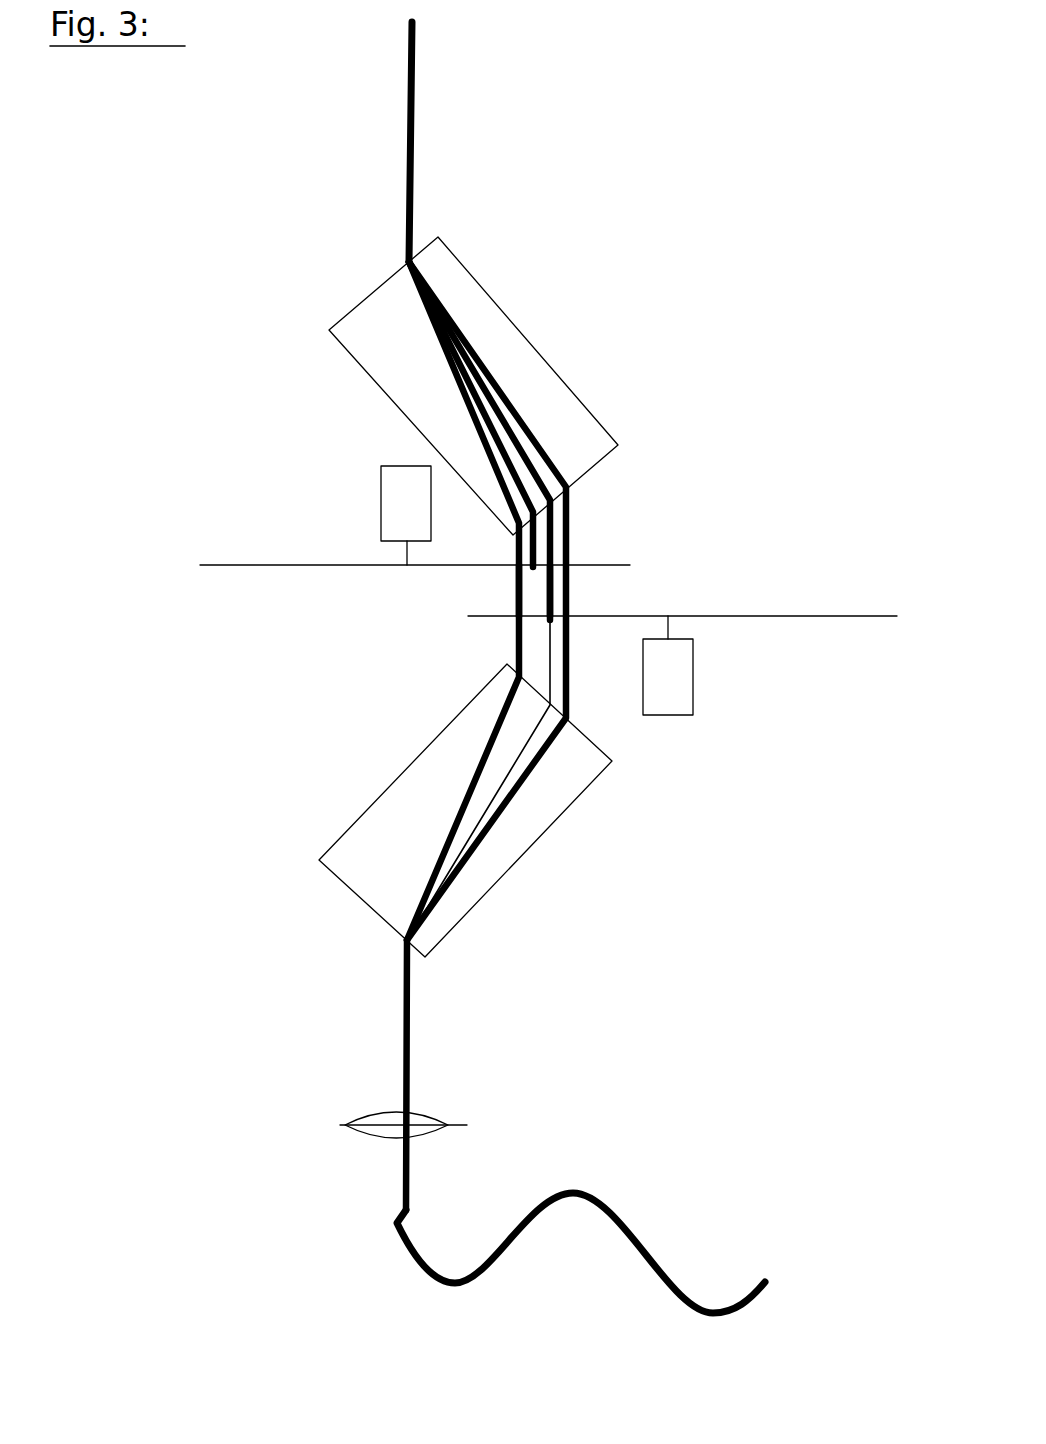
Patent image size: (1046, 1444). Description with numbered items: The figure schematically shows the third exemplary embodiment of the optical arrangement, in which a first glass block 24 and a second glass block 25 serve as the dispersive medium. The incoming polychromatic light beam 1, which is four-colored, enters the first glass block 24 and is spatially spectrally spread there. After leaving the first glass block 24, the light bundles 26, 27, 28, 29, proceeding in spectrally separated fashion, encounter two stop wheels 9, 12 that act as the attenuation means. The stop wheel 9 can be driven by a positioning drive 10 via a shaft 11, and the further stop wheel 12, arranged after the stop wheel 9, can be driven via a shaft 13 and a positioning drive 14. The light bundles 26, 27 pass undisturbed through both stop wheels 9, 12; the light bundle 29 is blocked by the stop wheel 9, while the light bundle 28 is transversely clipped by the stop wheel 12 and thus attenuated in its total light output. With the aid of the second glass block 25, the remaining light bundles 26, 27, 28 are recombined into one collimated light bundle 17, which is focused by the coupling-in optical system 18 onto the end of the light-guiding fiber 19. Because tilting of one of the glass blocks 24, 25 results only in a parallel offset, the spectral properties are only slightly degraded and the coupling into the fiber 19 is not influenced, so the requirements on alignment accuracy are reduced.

The yarn 1 is at (415, 106).
The stop wheel 9 is at (250, 567).
The positioning drive 10 is at (390, 493).
The shaft 11 is at (405, 555).
The further stop wheel 12 is at (822, 616).
The shaft 13 is at (668, 628).
The positioning drive 14 is at (682, 690).
The recombined light bundle 17 is at (408, 1007).
The coupling-in optical system 18 is at (440, 1125).
The light-guiding fiber 19 is at (603, 1207).
The first glass block 24 is at (468, 317).
The second glass block 25 is at (482, 875).
The light bundle 26 is at (566, 484).
The light bundle 27 is at (538, 550).
The light bundle 28 is at (555, 535).
The light bundle 29 is at (545, 558).